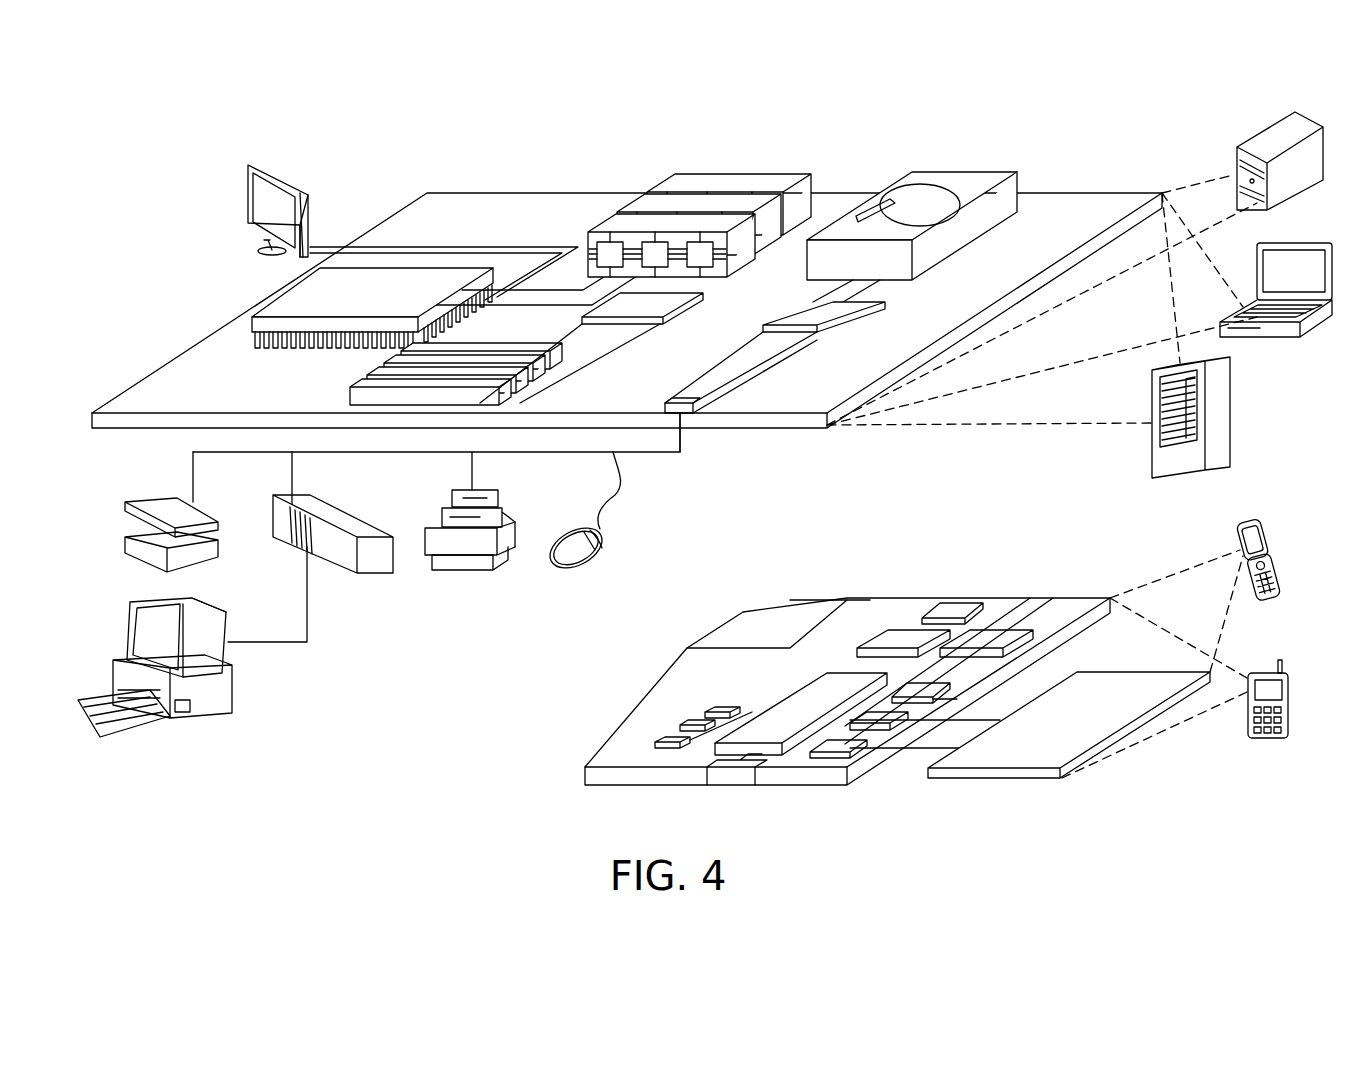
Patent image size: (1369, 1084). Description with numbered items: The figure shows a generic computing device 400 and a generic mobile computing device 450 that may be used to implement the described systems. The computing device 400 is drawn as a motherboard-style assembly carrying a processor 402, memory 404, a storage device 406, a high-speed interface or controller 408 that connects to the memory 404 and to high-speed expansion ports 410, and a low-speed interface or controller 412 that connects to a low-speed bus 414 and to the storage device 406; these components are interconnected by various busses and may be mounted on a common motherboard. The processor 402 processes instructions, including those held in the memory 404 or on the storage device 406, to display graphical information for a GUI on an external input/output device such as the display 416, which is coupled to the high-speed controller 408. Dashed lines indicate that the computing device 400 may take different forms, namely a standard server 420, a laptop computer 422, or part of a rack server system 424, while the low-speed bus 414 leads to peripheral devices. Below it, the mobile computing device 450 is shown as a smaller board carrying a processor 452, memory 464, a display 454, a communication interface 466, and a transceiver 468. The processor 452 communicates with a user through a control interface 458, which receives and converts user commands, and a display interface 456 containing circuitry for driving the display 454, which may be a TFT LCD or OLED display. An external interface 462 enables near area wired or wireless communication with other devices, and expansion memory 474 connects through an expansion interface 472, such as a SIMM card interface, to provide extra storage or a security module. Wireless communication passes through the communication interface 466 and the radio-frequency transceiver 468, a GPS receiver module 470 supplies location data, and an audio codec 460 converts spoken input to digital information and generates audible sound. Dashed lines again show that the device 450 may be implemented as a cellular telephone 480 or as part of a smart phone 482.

The computing device 400 is at (383, 144).
The processor 402 is at (290, 301).
The memory 404 is at (721, 195).
The storage device 406 is at (950, 173).
The high-speed interface or controller 408 is at (656, 302).
The high-speed expansion ports 410 is at (374, 376).
The low-speed interface or controller 412 is at (796, 311).
The low-speed bus 414 is at (683, 400).
The display 416 is at (250, 166).
The standard server 420 is at (1250, 140).
The laptop computer 422 is at (1308, 242).
The rack server system 424 is at (1232, 417).
The mobile computing device 450 is at (540, 790).
The processor 452 is at (768, 718).
The display 454 is at (1105, 690).
The display interface 456 is at (850, 742).
The control interface 458 is at (883, 719).
The audio codec 460 is at (906, 688).
The external interface 462 is at (731, 772).
The memory 464 is at (683, 727).
The communication interface 466 is at (900, 630).
The transceiver 468 is at (994, 630).
The GPS receiver module 470 is at (950, 603).
The expansion interface 472 is at (823, 598).
The expansion memory 474 is at (743, 611).
The cellular telephone 480 is at (1250, 521).
The smart phone 482 is at (1263, 672).